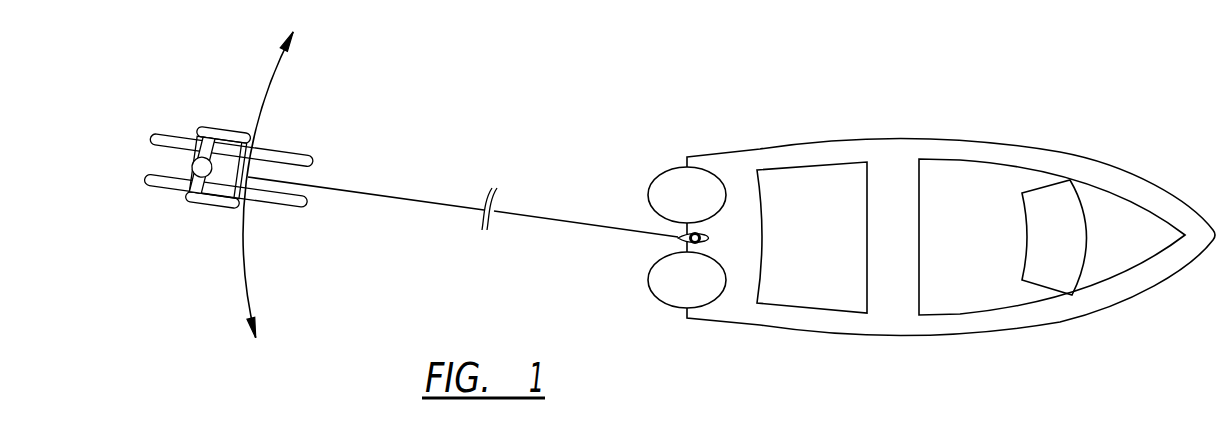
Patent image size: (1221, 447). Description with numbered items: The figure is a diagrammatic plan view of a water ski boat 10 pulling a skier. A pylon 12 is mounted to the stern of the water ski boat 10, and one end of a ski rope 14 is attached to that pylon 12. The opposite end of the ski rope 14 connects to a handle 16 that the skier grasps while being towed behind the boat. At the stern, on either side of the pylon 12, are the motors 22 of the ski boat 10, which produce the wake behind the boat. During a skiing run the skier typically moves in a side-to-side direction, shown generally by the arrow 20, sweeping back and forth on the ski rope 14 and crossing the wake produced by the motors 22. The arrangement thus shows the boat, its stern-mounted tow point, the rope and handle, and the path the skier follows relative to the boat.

The water ski boat 10 is at (1105, 110).
The pylon 12 is at (680, 242).
The ski rope 14 is at (385, 191).
The handle 16 is at (230, 175).
The arrow 20 is at (275, 80).
The motors 22 is at (670, 170).